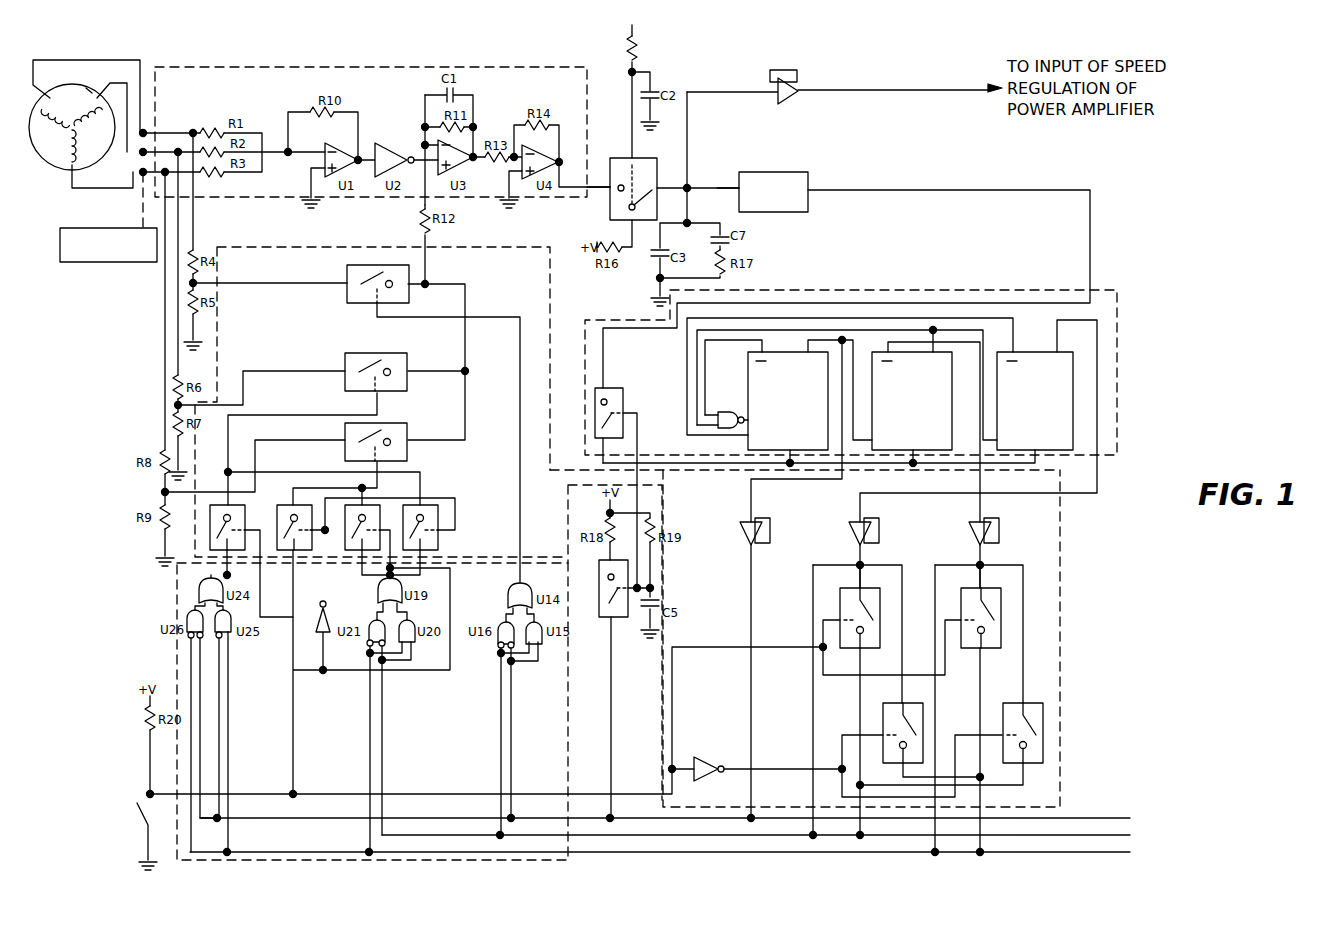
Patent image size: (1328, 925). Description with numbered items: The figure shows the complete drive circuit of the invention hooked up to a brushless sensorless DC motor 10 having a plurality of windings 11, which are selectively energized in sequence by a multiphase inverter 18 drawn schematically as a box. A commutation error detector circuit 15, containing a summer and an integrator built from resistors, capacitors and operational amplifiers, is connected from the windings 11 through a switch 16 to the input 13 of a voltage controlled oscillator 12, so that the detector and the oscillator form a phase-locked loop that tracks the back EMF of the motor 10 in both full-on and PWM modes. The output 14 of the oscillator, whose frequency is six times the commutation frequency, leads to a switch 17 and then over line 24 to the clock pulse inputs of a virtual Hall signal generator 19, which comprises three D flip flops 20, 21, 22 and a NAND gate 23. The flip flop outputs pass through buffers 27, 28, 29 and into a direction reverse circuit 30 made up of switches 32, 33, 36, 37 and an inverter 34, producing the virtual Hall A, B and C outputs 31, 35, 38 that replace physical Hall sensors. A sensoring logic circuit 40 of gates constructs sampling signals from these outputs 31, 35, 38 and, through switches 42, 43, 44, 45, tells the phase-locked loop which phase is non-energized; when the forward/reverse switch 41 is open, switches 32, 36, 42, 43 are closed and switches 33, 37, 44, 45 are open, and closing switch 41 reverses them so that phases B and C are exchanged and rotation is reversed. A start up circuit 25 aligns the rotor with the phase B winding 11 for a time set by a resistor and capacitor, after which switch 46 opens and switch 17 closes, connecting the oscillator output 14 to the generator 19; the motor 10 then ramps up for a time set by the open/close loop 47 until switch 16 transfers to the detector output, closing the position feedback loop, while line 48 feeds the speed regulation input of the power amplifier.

The brushless sensorless DC motor 10 is at (62, 203).
The windings 11 is at (88, 88).
The voltage controlled oscillator 12 is at (782, 172).
The VCO input 13 is at (728, 186).
The VCO output 14 is at (812, 184).
The commutation error detector circuit 15 is at (435, 67).
The switch 16 is at (621, 158).
The switch 17 is at (628, 392).
The multiphase inverter 18 is at (122, 262).
The virtual Hall signal generator 19 is at (990, 283).
The D flip flop 20 is at (786, 355).
The D flip flop 21 is at (876, 370).
The D flip flop 22 is at (1034, 358).
The NAND gate 23 is at (734, 392).
The line 24 is at (668, 462).
The start up circuit 25 is at (620, 634).
The buffer 27 is at (766, 552).
The buffer 28 is at (893, 521).
The buffer 29 is at (1012, 521).
The direction reverse circuit 30 is at (1067, 652).
The virtual Hall A output 31 is at (1106, 816).
The switch 32 is at (845, 657).
The switch 33 is at (878, 725).
The inverter 34 is at (698, 755).
The virtual Hall B output 35 is at (1083, 833).
The switch 36 is at (1010, 595).
The switch 37 is at (1032, 700).
The virtual Hall C output 38 is at (1086, 855).
The sensoring logic circuit 40 is at (542, 862).
The switch 41 is at (122, 843).
The switch 42 is at (250, 503).
The switch 43 is at (382, 500).
The switch 44 is at (300, 503).
The switch 45 is at (433, 501).
The switch 46 is at (599, 603).
The open/close loop 47 is at (642, 66).
The speed regulation line 48 is at (886, 94).